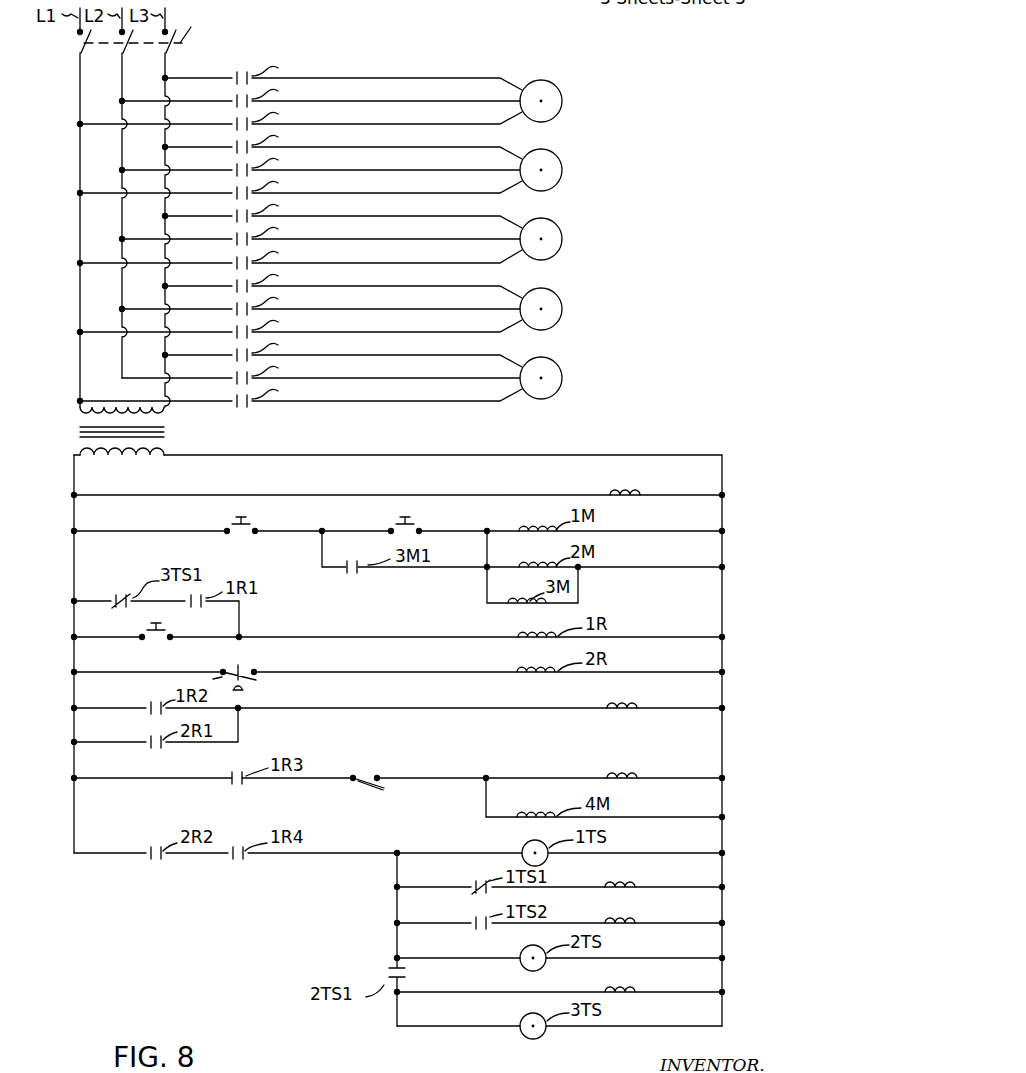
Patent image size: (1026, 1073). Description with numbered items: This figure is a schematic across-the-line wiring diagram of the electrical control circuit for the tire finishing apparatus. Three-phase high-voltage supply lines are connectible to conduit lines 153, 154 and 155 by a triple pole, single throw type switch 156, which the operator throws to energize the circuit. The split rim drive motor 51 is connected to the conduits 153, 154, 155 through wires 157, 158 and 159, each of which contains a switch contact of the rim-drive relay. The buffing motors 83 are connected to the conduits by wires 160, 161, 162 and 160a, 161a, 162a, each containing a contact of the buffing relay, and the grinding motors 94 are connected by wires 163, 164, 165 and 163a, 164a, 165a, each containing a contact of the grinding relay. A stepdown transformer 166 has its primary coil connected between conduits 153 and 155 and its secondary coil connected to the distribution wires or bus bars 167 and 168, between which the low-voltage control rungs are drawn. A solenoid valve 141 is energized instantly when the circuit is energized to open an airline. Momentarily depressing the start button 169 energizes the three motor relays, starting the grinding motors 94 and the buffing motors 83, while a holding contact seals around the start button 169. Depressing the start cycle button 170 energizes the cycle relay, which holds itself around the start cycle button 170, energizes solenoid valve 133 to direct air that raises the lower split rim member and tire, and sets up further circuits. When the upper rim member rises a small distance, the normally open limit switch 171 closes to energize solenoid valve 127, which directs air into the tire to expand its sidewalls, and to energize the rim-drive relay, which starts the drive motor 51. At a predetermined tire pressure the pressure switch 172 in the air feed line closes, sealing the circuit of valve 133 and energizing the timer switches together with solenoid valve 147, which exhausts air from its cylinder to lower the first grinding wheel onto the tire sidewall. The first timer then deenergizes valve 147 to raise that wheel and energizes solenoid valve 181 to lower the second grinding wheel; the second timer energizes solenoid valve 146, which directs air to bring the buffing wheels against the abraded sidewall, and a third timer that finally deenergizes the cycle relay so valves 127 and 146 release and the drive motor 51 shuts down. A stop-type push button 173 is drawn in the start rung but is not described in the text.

The split rim drive motor 51 is at (562, 102).
The grinding motors 94 is at (562, 171).
The buffing motors 83 is at (562, 310).
The conduit line 153 is at (78, 108).
The conduit line 154 is at (121, 92).
The conduit line 155 is at (164, 67).
The triple pole, single throw type switch 156 is at (184, 47).
The wire 157 is at (354, 124).
The wire 158 is at (396, 101).
The wire 159 is at (446, 78).
The wire 160 is at (336, 332).
The wire 160a is at (336, 401).
The wire 161 is at (384, 309).
The wire 161a is at (384, 378).
The wire 162 is at (432, 286).
The wire 162a is at (424, 355).
The wire 163 is at (354, 193).
The wire 163a is at (354, 263).
The wire 164 is at (396, 170).
The wire 164a is at (396, 239).
The wire 165 is at (446, 147).
The wire 165a is at (446, 216).
The stepdown transformer 166 is at (168, 438).
The distribution wire or bus bar 167 is at (74, 568).
The distribution wire or bus bar 168 is at (723, 616).
The start button 169 is at (411, 517).
The start cycle button 170 is at (166, 629).
The limit switch 171 is at (371, 790).
The pressure switch 172 is at (250, 670).
The stop push button 173 is at (233, 526).
The solenoid valve 141 is at (641, 493).
The solenoid valve 133 is at (638, 706).
The solenoid valve 127 is at (638, 776).
The solenoid valve 147 is at (637, 885).
The solenoid valve 181 is at (637, 921).
The solenoid valve 146 is at (637, 990).